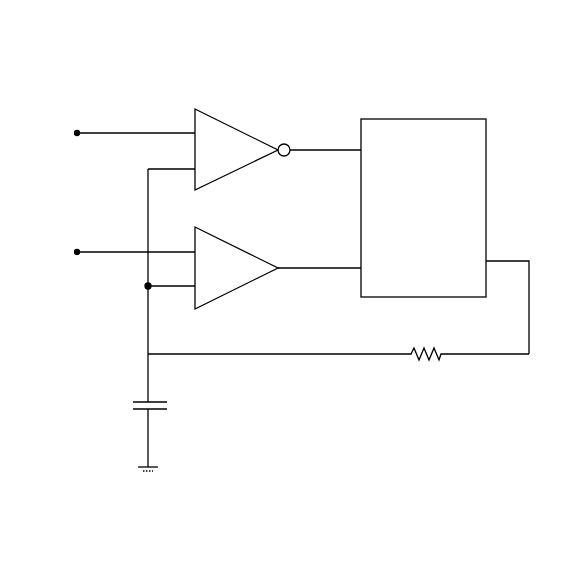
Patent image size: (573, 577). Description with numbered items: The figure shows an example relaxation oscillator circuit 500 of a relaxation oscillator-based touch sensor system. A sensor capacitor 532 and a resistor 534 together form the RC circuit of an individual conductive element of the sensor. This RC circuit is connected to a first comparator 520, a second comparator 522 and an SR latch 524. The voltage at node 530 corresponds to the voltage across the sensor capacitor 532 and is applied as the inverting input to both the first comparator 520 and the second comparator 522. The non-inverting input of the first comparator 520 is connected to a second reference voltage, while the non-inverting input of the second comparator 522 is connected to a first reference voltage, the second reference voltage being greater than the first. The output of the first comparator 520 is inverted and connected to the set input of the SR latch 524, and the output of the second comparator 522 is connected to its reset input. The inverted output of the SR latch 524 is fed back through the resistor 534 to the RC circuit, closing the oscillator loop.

The relaxation oscillator circuit 500 is at (90, 50).
The comparator 520 is at (252, 140).
The comparator 522 is at (256, 258).
The SR latch 524 is at (450, 118).
The node 530 is at (102, 290).
The sensor capacitor 532 is at (170, 404).
The resistor 534 is at (441, 358).